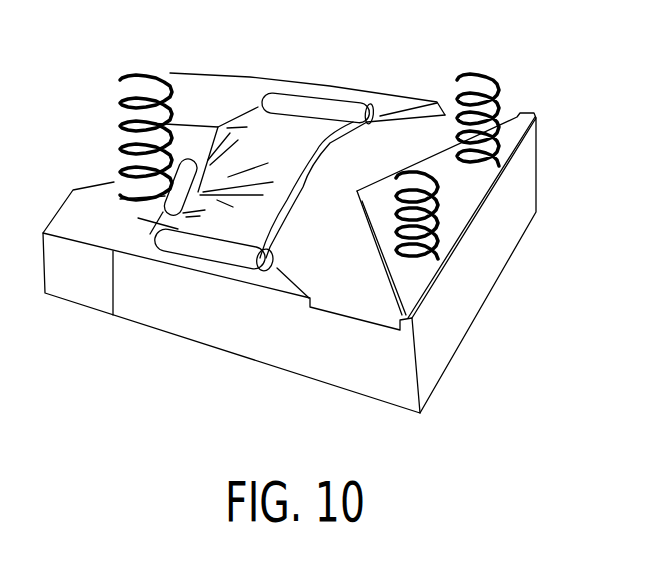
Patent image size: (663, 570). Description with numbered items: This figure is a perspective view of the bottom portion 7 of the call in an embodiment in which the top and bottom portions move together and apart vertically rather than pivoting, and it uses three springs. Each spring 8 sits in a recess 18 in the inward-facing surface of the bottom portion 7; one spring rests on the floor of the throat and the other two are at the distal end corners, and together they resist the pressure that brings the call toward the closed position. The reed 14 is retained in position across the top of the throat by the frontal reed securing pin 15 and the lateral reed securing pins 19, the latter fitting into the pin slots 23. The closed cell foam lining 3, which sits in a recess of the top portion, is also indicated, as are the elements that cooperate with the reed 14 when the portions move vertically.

The closed cell foam lining 3 is at (150, 207).
The bottom portion 7 is at (352, 307).
The spring 8 is at (123, 128).
The reed 14 is at (232, 203).
The frontal reed securing pin 15 is at (120, 183).
The recess 18 is at (418, 271).
The lateral reed securing pins 19 is at (320, 103).
The pin slots 23 is at (285, 90).